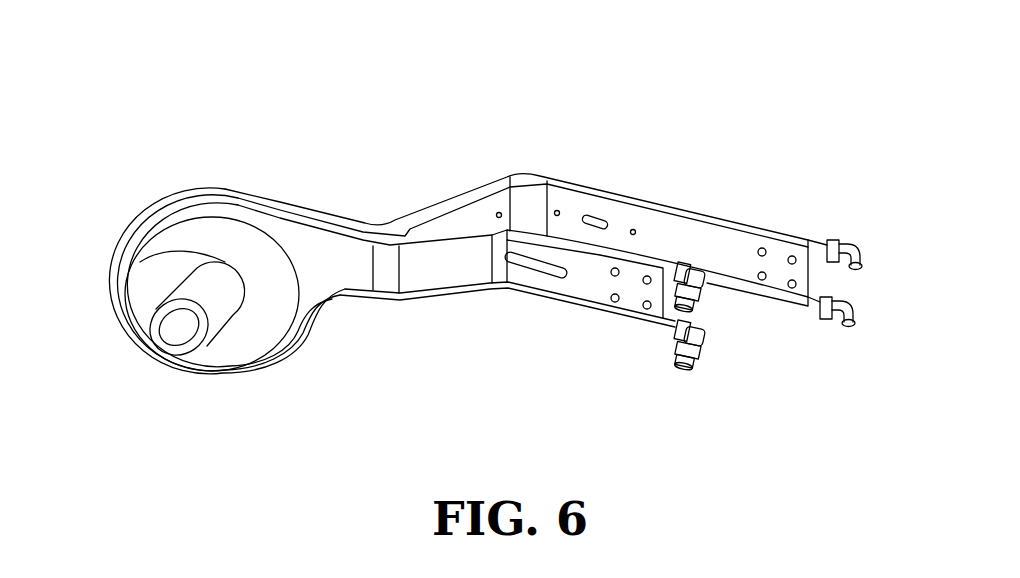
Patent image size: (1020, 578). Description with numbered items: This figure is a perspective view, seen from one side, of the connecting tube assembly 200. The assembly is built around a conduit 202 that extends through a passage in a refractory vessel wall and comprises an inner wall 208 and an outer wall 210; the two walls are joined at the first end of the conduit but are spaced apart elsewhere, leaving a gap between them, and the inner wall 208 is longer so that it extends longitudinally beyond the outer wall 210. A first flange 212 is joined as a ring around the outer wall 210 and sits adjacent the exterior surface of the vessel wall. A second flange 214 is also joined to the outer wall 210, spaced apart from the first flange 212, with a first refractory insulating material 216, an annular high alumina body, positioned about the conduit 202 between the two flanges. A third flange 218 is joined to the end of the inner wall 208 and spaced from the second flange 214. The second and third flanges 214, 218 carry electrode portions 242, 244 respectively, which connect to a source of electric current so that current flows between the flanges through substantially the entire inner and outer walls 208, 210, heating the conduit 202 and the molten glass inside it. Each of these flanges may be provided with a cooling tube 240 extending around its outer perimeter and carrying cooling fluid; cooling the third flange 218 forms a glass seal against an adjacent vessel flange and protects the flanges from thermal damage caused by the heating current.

The connecting tube assembly 200 is at (427, 152).
The conduit 202 is at (308, 326).
The inner wall 208 is at (177, 331).
The outer wall 210 is at (133, 295).
The first flange 212 is at (250, 348).
The second flange 214 is at (100, 229).
The first refractory insulating material 216 is at (262, 243).
The third flange 218 is at (199, 173).
The cooling tube 240 is at (622, 317).
The electrode portion 242 is at (583, 287).
The electrode portion 244 is at (582, 205).